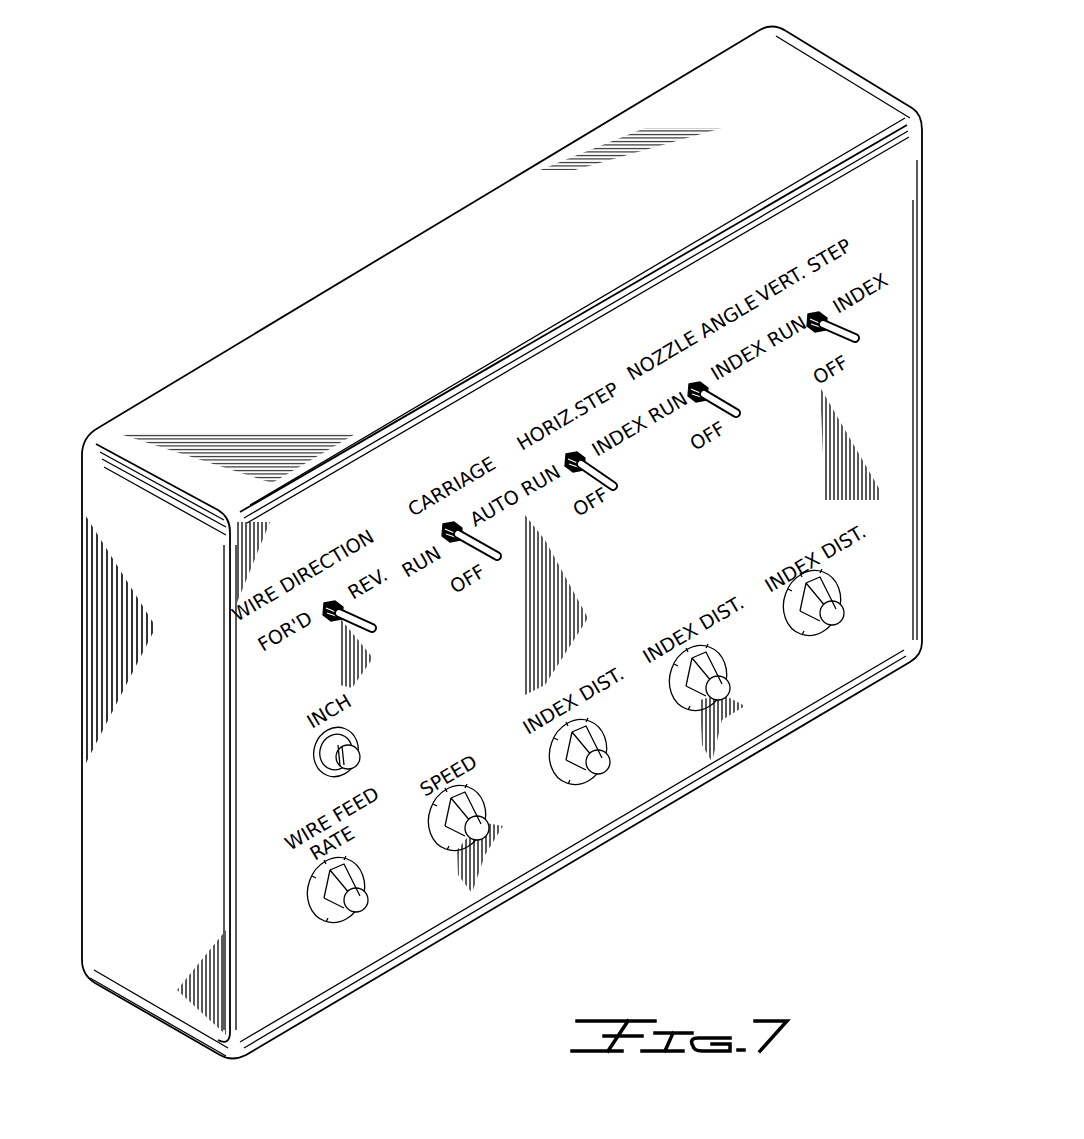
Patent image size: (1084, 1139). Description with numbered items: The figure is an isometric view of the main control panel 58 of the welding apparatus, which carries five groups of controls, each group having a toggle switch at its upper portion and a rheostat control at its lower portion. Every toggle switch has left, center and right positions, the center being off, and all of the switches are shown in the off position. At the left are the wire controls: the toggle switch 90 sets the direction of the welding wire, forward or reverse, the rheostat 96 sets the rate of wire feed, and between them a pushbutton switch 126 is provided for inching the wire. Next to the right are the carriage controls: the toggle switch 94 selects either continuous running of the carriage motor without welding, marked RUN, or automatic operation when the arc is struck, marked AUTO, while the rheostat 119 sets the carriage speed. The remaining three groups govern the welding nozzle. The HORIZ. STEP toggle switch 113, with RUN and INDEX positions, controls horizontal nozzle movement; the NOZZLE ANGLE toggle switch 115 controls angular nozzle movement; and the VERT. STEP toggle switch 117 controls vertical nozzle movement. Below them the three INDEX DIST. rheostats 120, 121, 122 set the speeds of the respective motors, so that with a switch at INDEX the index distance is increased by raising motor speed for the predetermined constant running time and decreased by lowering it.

The main control panel 58 is at (258, 338).
The toggle switch 90 is at (334, 620).
The toggle switch 94 is at (448, 545).
The rheostat 96 is at (344, 920).
The HORIZ. STEP toggle switch 113 is at (571, 476).
The NOZZLE ANGLE toggle switch 115 is at (693, 405).
The VERT. STEP toggle switch 117 is at (815, 335).
The rheostat 119 is at (447, 857).
The INDEX DIST. rheostat 120 is at (584, 782).
The INDEX DIST. rheostat 121 is at (690, 712).
The INDEX DIST. rheostat 122 is at (830, 640).
The pushbutton switch 126 is at (326, 772).